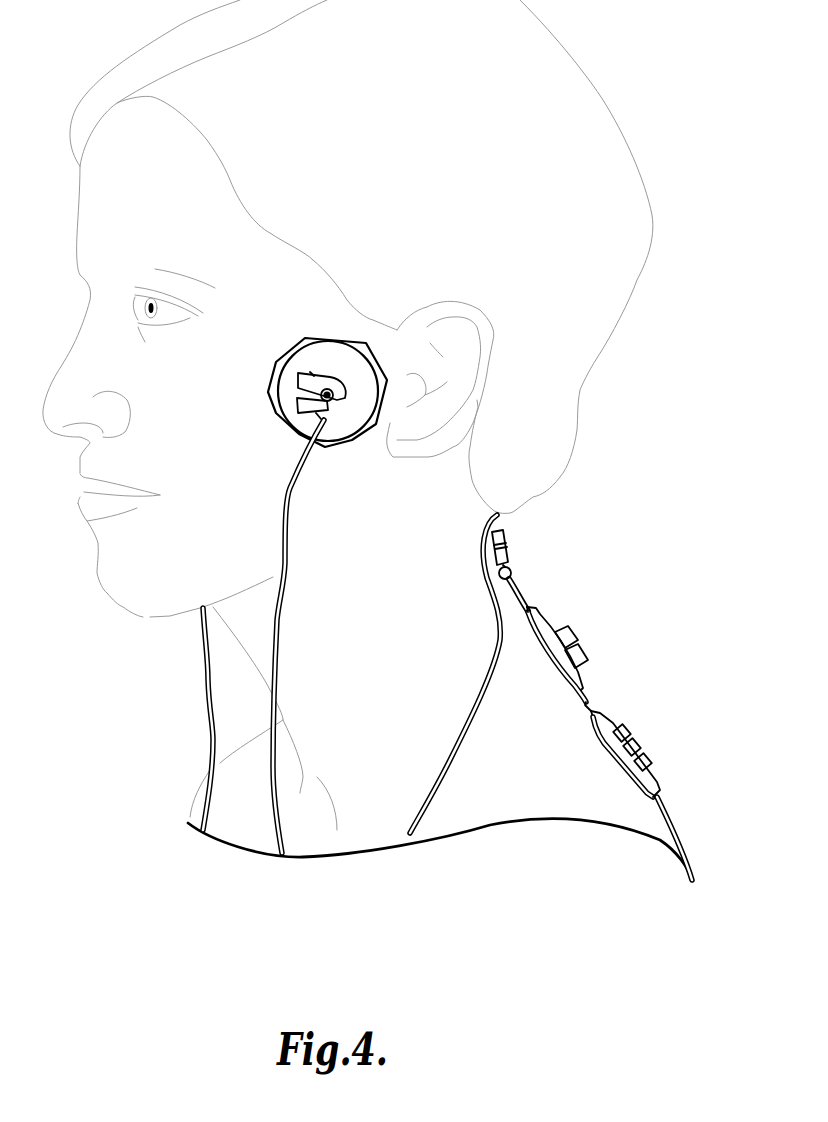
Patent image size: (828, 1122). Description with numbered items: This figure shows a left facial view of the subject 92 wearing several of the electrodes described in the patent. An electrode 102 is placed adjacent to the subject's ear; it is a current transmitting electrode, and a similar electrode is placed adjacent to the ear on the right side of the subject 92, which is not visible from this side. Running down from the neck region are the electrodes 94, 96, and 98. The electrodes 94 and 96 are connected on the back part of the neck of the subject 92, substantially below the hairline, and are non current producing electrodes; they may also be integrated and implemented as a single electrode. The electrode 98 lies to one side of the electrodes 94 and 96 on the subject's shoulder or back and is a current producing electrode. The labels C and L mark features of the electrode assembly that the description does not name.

The subject 92 is at (597, 358).
The electrode 94 is at (513, 588).
The electrode 96 is at (580, 680).
The electrode 98 is at (610, 723).
The electrode 102 is at (284, 421).
The connector C is at (505, 543).
The latch L is at (312, 374).